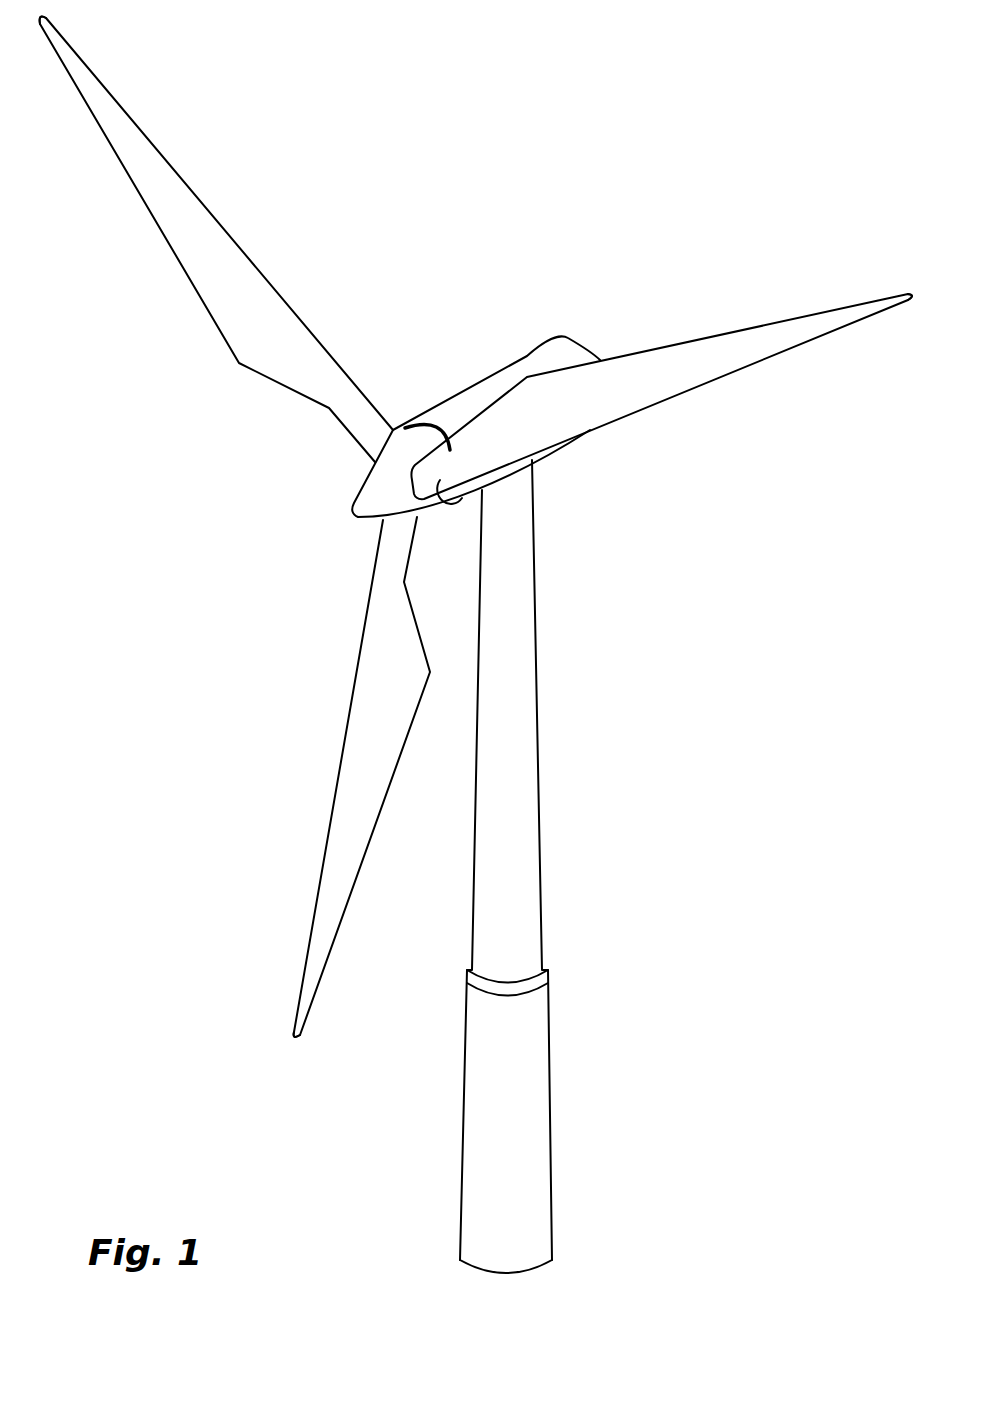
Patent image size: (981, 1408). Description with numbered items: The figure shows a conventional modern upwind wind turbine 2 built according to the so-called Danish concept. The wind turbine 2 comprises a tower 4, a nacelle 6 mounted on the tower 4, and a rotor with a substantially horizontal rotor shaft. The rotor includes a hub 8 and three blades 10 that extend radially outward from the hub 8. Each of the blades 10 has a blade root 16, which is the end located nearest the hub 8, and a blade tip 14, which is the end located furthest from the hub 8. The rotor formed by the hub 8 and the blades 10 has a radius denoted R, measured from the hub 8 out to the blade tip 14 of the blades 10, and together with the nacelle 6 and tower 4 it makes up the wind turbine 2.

The wind turbine 2 is at (638, 803).
The tower 4 is at (527, 720).
The nacelle 6 is at (470, 403).
The hub 8 is at (368, 493).
The blades 10 is at (253, 335).
The blade tip 14 is at (84, 81).
The blade root 16 is at (377, 447).